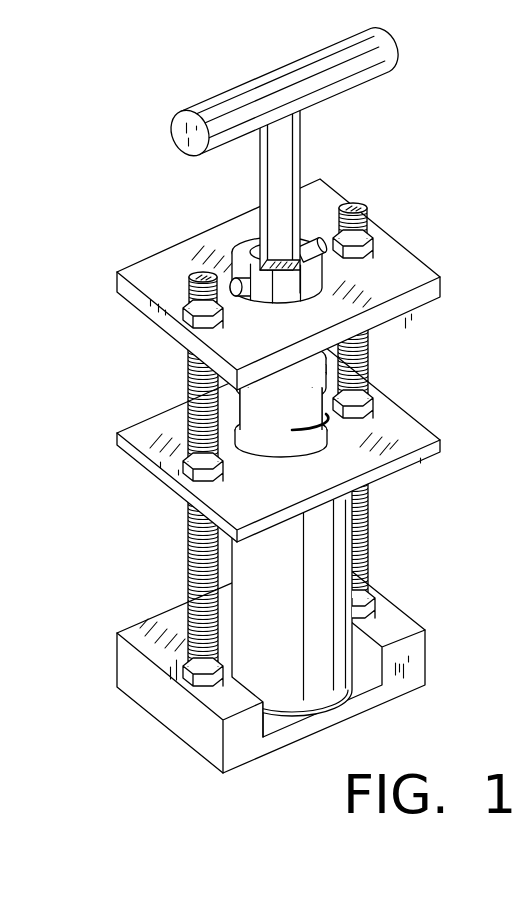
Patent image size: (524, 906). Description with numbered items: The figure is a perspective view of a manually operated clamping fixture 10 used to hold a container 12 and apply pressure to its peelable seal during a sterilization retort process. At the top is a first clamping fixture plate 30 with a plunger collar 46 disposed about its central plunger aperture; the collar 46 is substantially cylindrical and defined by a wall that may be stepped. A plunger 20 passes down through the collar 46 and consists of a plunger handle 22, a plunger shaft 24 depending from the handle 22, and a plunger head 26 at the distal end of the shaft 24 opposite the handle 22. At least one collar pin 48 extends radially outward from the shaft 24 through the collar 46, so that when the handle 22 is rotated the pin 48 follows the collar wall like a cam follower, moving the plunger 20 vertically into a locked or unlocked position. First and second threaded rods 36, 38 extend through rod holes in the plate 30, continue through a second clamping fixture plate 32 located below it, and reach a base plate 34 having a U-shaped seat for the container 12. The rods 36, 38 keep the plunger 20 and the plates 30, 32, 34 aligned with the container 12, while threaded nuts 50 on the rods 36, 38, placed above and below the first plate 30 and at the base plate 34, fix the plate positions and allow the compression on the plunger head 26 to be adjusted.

The manually operated clamping fixture 10 is at (277, 396).
The container 12 is at (340, 628).
The plunger 20 is at (272, 347).
The plunger handle 22 is at (385, 61).
The plunger shaft 24 is at (290, 166).
The plunger head 26 is at (277, 393).
The first clamping fixture plate 30 is at (143, 271).
The second clamping fixture plate 32 is at (432, 437).
The base plate 34 is at (415, 670).
The first threaded rod 36 is at (188, 372).
The second threaded rod 38 is at (368, 346).
The plunger collar 46 is at (265, 295).
The collar pin 48 is at (330, 256).
The threaded nut 50 is at (373, 232).